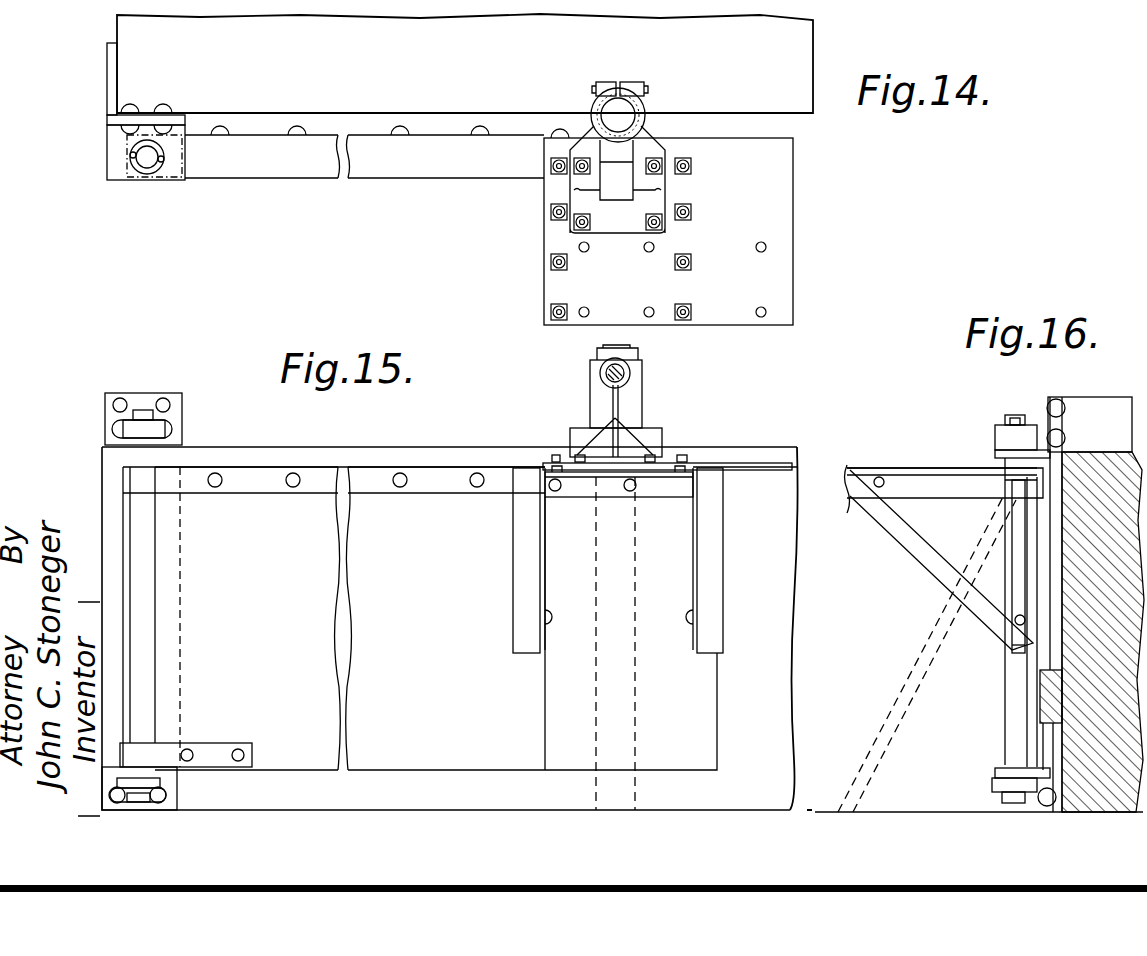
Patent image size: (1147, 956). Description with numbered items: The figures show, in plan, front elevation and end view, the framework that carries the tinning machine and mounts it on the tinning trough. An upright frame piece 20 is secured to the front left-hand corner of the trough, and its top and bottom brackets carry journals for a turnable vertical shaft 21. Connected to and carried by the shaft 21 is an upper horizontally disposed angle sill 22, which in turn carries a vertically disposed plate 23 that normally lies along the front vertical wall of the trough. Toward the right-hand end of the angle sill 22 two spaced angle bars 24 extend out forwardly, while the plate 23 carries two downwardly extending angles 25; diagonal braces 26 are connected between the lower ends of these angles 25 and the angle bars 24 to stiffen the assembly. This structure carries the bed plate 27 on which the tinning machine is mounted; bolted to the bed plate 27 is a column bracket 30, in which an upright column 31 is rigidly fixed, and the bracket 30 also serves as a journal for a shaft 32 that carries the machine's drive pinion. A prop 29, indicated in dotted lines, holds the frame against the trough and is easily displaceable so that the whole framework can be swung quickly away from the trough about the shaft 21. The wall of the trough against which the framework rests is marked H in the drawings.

In FIG. 14, the upright frame piece 20 is at (112, 82).
In FIG. 15, the upright frame piece 20 is at (112, 457).
In FIG. 16, the upright frame piece 20 is at (1057, 468).
In FIG. 14, the vertical shaft 21 is at (147, 163).
In FIG. 15, the vertical shaft 21 is at (147, 537).
In FIG. 16, the vertical shaft 21 is at (1012, 415).
In FIG. 14, the angle sill 22 is at (367, 172).
In FIG. 15, the angle sill 22 is at (368, 478).
In FIG. 16, the angle sill 22 is at (1003, 483).
In FIG. 15, the plate 23 is at (712, 728).
In FIG. 16, the plate 23 is at (1037, 692).
In FIG. 15, the angle bars 24 is at (684, 497).
In FIG. 16, the angle bars 24 is at (953, 487).
In FIG. 15, the downwardly extending angles 25 is at (693, 633).
In FIG. 16, the downwardly extending angles 25 is at (1012, 645).
In FIG. 15, the diagonal braces 26 is at (518, 567).
In FIG. 16, the diagonal braces 26 is at (950, 550).
In FIG. 14, the bed plate 27 is at (785, 248).
In FIG. 15, the bed plate 27 is at (717, 465).
In FIG. 16, the bed plate 27 is at (851, 500).
In FIG. 15, the prop 29 is at (630, 707).
In FIG. 16, the prop 29 is at (880, 755).
In FIG. 14, the column bracket 30 is at (660, 183).
In FIG. 15, the column bracket 30 is at (660, 433).
In FIG. 14, the upright column 31 is at (632, 101).
In FIG. 15, the upright column 31 is at (643, 353).
In FIG. 15, the shaft 32 is at (603, 377).
In FIG. 14, the hull wall H is at (810, 115).
In FIG. 15, the hull wall H is at (783, 458).
In FIG. 16, the hull wall H is at (1103, 467).